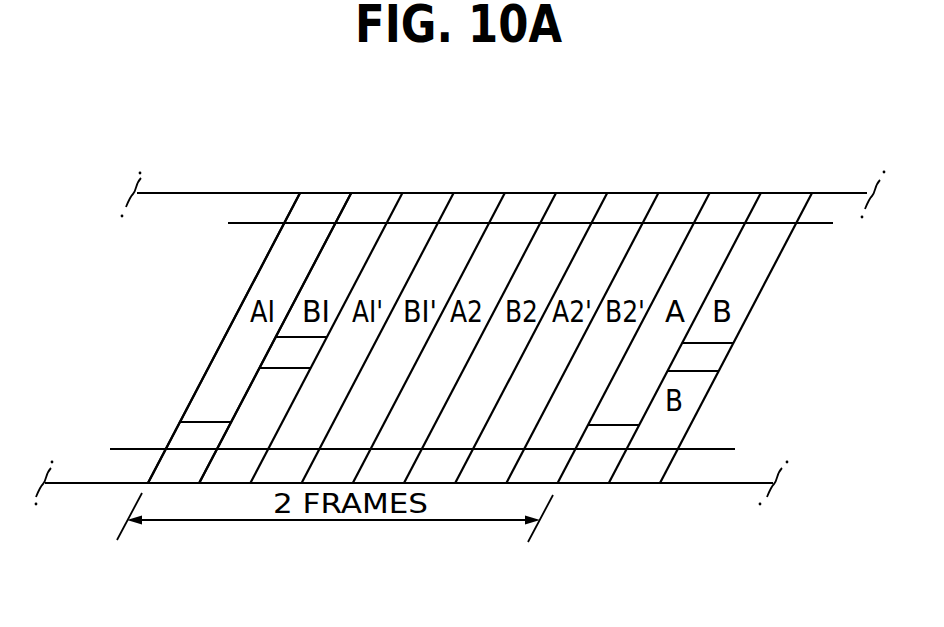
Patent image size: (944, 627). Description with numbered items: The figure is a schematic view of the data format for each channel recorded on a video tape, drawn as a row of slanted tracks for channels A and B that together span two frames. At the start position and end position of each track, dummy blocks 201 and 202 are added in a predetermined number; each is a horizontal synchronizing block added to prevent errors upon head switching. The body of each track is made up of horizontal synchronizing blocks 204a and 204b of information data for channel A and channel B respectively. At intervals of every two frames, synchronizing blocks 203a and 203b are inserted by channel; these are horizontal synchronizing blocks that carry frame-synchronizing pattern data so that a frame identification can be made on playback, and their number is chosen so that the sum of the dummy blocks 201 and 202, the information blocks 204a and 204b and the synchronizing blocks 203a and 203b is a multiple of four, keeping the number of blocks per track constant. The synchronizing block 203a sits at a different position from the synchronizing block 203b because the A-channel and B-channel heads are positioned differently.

The dummy block 201 is at (114, 465).
The dummy block 202 is at (259, 203).
The synchronizing block 203a is at (185, 435).
The synchronizing block 203b is at (280, 352).
The horizontal synchronizing block of information data 204a is at (208, 384).
The horizontal synchronizing block of information data 204b is at (320, 277).